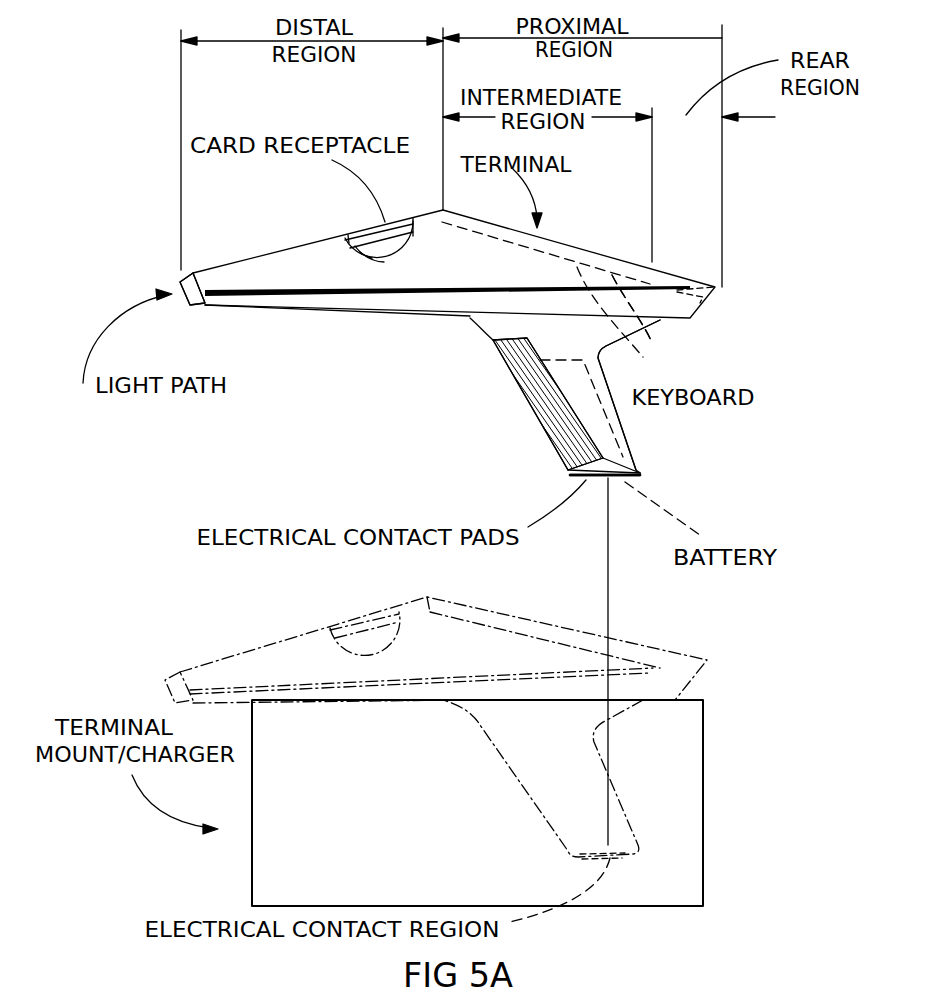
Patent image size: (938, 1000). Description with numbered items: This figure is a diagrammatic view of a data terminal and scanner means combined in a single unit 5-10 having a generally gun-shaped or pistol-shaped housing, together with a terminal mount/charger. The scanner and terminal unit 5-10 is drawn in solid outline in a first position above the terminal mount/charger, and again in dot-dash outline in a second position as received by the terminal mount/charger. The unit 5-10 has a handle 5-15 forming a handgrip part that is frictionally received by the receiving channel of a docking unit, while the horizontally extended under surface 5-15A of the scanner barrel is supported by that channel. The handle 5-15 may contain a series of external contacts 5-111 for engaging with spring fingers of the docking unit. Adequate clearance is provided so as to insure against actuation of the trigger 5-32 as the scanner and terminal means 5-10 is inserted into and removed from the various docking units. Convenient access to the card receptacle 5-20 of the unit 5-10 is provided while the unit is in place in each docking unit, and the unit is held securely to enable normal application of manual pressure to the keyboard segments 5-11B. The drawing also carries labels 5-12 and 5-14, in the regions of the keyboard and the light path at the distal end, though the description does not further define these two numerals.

The scanner and terminal unit 5-10 is at (372, 440).
The card receptacle 5-20 is at (350, 240).
The keyboard 5-12 is at (570, 253).
The light path window 5-14 is at (195, 307).
The horizontally extended under surface 5-15A is at (400, 316).
The trigger 5-32 is at (503, 363).
The keyboard segments 5-11B is at (648, 323).
The handle 5-15 is at (628, 428).
The external contacts 5-111 is at (598, 480).